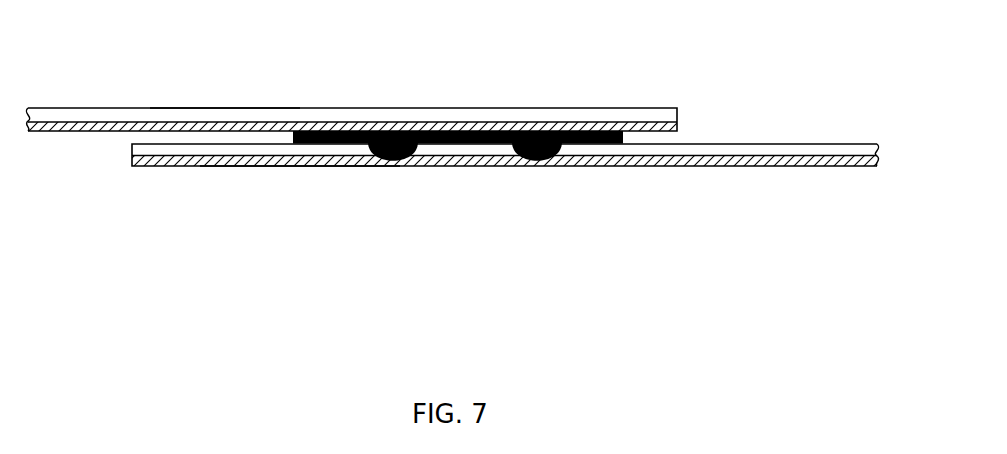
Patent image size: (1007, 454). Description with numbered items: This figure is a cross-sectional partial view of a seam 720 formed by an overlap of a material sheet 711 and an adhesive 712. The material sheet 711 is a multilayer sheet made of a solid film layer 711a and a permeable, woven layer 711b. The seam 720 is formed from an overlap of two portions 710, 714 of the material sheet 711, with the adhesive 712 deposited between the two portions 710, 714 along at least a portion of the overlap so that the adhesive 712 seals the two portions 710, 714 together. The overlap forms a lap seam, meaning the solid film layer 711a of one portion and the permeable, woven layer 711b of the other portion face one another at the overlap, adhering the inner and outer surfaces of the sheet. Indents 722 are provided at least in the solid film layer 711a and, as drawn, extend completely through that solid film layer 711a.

The seam 720 is at (603, 283).
The material sheet 711 is at (43, 158).
The solid film layer 711a is at (272, 115).
The permeable, woven layer 711b is at (147, 125).
The portion of the material sheet 714 is at (213, 123).
The portion of the material sheet 710 is at (278, 163).
The adhesive 712 is at (460, 145).
The indents 722 is at (380, 163).